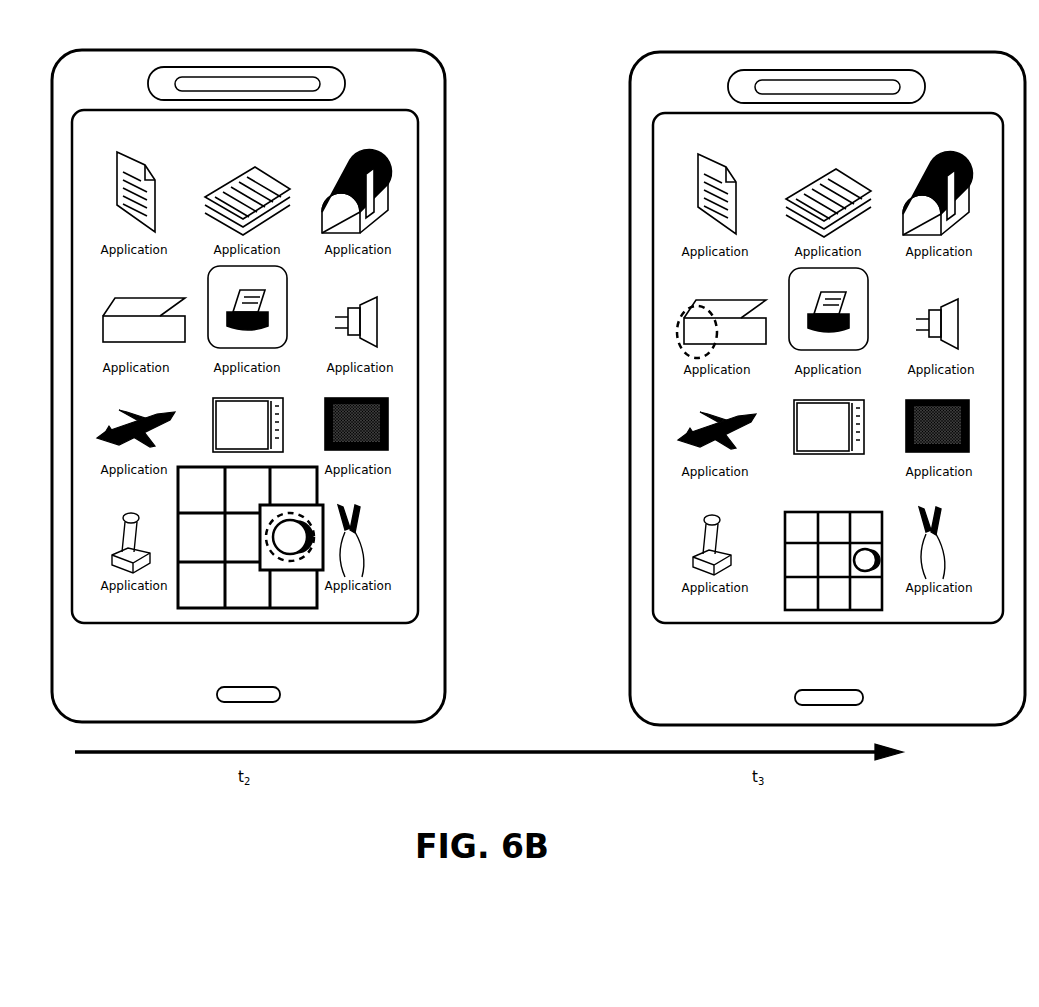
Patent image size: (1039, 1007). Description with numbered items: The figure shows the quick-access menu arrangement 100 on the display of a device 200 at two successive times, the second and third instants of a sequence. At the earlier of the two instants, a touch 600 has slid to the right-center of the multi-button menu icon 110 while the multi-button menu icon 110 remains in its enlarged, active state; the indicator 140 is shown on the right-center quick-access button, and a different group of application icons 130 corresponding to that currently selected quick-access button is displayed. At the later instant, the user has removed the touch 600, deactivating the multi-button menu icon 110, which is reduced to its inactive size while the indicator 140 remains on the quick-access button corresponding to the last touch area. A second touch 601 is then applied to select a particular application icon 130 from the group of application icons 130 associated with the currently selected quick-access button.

The device 200 is at (98, 38).
The quick-access menu arrangement 100 is at (140, 110).
The application icons 130 is at (92, 279).
The multi-button menu icon 110 is at (185, 608).
The indicator 140 is at (302, 563).
The touch 600 is at (272, 563).
The second touch 601 is at (677, 327).